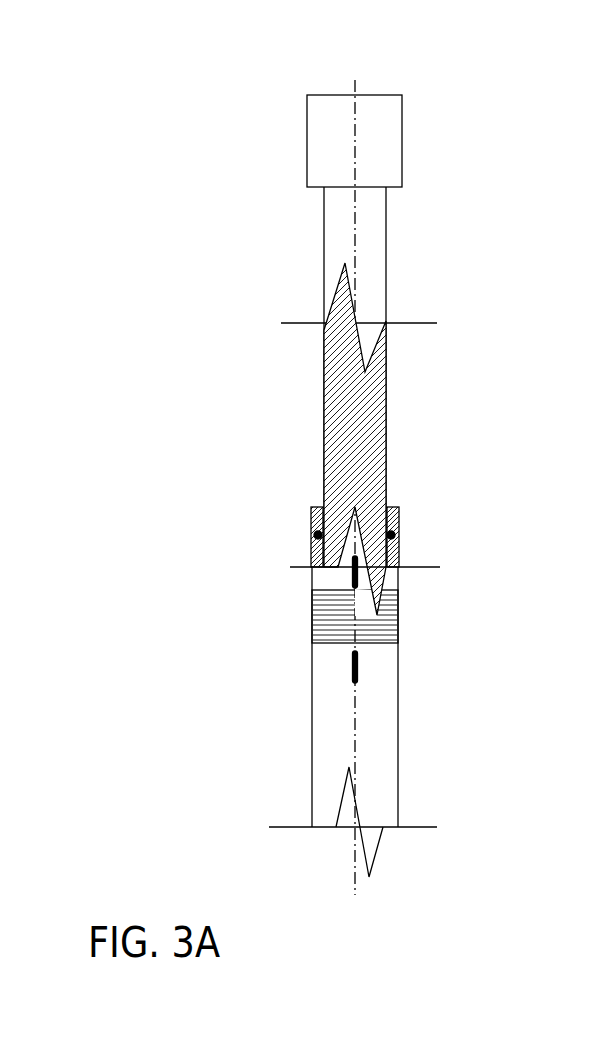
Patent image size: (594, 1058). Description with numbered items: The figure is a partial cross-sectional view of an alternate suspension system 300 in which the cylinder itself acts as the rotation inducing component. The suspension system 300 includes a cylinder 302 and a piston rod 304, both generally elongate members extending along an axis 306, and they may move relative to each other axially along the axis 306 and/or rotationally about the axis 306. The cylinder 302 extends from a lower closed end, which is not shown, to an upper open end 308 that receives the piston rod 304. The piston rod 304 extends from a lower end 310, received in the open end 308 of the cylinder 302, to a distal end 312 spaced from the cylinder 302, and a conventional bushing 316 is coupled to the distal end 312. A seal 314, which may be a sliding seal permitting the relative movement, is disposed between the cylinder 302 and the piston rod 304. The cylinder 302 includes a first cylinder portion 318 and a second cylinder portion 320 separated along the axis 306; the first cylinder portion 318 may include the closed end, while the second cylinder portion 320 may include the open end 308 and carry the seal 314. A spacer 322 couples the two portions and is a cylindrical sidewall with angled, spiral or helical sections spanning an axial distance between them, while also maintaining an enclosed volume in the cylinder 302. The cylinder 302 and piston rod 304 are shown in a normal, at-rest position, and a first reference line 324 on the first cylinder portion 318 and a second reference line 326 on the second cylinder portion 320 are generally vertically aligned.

The suspension system 300 is at (255, 88).
The cylinder 302 is at (297, 722).
The piston rod 304 is at (272, 439).
The axis 306 is at (419, 505).
The open end 308 is at (278, 555).
The lower end 310 is at (299, 608).
The distal end 312 is at (297, 377).
The seal 314 is at (417, 508).
The bushing 316 is at (280, 168).
The first cylinder portion 318 is at (420, 743).
The second cylinder portion 320 is at (420, 552).
The spacer 322 is at (416, 643).
The first reference line 324 is at (437, 692).
The second reference line 326 is at (437, 596).